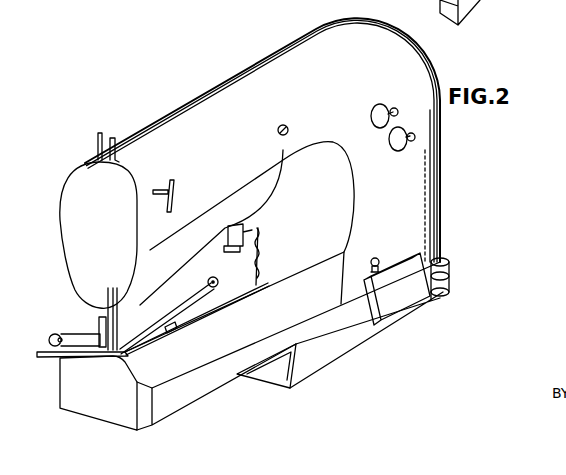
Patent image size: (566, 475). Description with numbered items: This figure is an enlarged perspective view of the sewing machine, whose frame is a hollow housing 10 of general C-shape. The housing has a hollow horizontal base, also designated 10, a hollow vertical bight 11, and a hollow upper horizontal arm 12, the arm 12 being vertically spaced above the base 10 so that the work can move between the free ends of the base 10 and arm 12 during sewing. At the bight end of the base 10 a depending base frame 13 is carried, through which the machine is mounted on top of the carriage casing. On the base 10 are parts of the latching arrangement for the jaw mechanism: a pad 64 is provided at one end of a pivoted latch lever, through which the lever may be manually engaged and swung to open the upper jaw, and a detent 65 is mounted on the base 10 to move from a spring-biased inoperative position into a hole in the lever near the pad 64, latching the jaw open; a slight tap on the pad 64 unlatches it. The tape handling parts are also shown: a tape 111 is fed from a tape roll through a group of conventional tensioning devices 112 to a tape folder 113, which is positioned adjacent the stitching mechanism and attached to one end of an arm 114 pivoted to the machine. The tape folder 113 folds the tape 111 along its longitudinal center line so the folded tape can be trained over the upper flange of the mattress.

The hollow housing 10 is at (277, 44).
The upper horizontal arm 12 is at (207, 107).
The vertical bight 11 is at (416, 172).
The base frame 13 is at (356, 342).
The pad 64 is at (407, 310).
The detent 65 is at (386, 237).
The tape 111 is at (208, 318).
The tensioning devices 112 is at (262, 253).
The tape folder 113 is at (127, 358).
The arm 114 is at (177, 305).